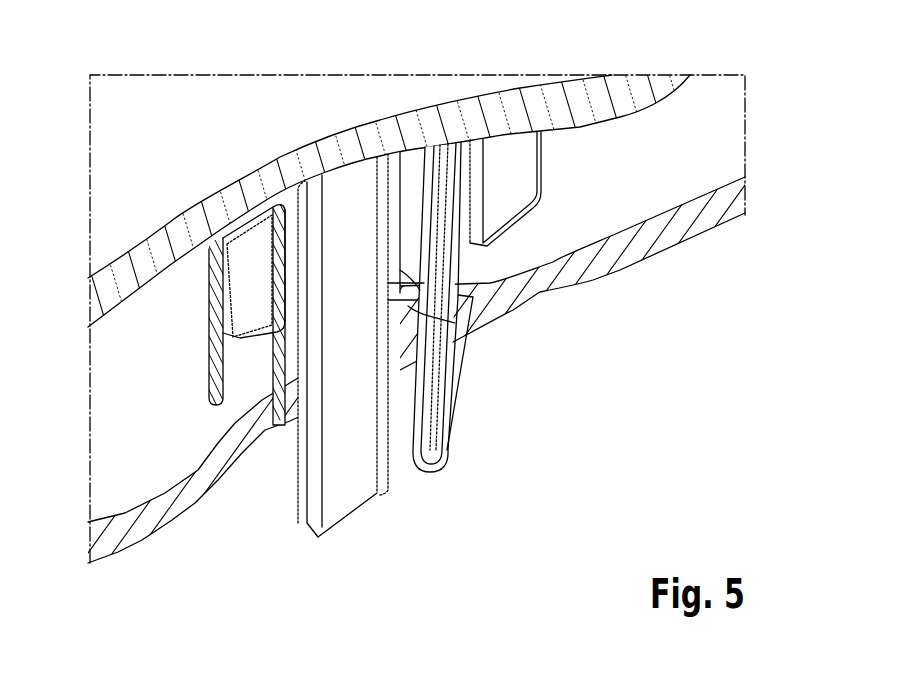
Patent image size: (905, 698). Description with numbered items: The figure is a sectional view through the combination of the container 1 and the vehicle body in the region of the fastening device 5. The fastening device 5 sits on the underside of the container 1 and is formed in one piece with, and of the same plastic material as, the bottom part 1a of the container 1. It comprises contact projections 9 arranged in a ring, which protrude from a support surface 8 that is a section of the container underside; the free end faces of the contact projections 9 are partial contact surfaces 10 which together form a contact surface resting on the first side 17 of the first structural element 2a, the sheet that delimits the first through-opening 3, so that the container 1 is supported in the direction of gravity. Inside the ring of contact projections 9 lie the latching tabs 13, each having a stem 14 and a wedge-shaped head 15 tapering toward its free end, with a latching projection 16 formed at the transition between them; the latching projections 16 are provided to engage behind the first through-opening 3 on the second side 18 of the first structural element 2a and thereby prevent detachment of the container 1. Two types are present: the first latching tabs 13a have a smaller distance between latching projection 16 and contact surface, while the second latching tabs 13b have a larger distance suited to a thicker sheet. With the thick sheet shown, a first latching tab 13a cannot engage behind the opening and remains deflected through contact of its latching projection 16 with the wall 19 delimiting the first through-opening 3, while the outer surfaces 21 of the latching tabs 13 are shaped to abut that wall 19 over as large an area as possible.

The container 1 is at (417, 282).
The bottom part 1a is at (156, 88).
The first structural element 2a is at (425, 380).
The first through-opening 3 is at (403, 333).
The fastening device 5 is at (497, 477).
The support surface 8 is at (154, 304).
The contact projection 9 is at (220, 297).
The partial contact surface 10 is at (225, 403).
The latching tab 13 is at (405, 368).
The first latching tab 13a is at (439, 446).
The second latching tab 13b is at (350, 495).
The stem 14 is at (352, 220).
The head 15 is at (450, 413).
The latching projection 16 is at (475, 322).
The first side 17 is at (647, 170).
The second side 18 is at (660, 262).
The wall 19 is at (412, 303).
The outer surface 21 is at (458, 375).